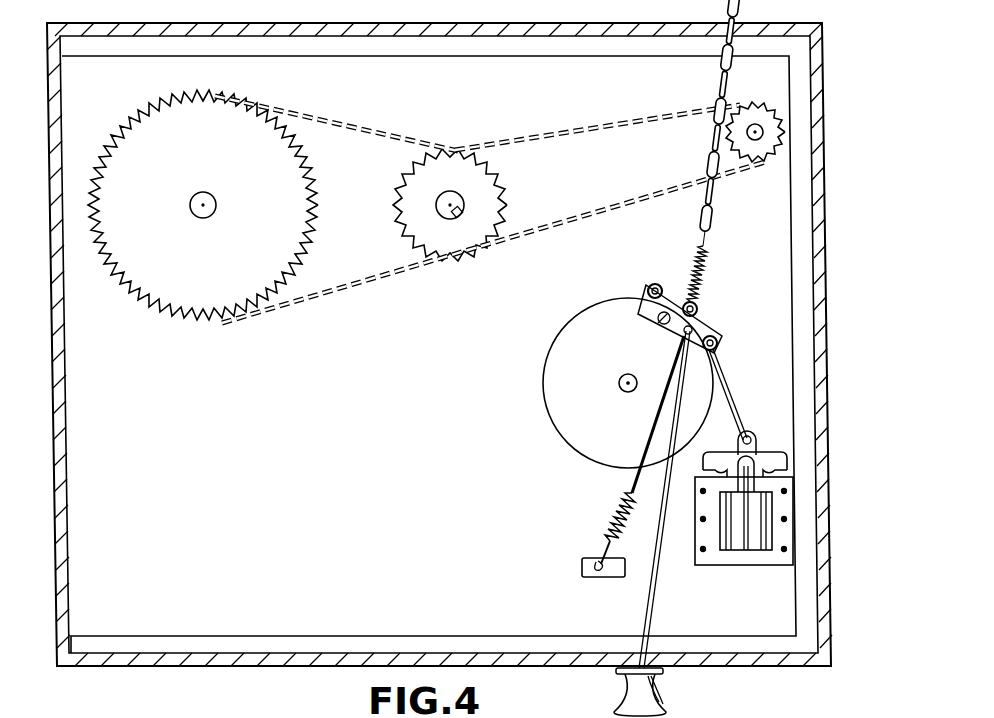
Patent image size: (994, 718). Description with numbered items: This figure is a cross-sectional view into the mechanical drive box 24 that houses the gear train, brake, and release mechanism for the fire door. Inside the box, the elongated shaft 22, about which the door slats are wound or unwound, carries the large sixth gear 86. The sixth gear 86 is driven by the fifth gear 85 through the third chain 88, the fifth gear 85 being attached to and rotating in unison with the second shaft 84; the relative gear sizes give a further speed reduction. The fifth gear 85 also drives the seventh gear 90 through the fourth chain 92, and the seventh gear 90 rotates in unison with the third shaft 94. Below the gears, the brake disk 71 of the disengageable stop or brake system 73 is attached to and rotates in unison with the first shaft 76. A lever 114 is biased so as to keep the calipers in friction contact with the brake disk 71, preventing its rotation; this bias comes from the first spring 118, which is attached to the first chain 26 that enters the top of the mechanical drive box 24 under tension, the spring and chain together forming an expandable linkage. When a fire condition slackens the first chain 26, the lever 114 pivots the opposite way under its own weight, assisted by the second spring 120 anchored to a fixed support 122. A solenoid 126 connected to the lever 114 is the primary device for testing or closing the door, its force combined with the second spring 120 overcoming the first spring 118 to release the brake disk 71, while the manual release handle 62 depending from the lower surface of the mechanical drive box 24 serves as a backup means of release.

The elongated shaft 22 is at (205, 192).
The mechanical drive box 24 is at (53, 456).
The first chain 26 is at (712, 195).
The manual release handle 62 is at (664, 694).
The brake disk 71 is at (568, 418).
The disengageable stop or brake system 73 is at (640, 285).
The first shaft 76 is at (620, 378).
The second shaft 84 is at (451, 191).
The fifth gear 85 is at (452, 243).
The sixth gear 86 is at (217, 265).
The third chain 88 is at (348, 125).
The seventh gear 90 is at (758, 163).
The fourth chain 92 is at (573, 128).
The third shaft 94 is at (756, 124).
The lever 114 is at (722, 341).
The first spring 118 is at (705, 274).
The second spring 120 is at (622, 530).
The fixed support 122 is at (582, 569).
The solenoid 126 is at (760, 566).